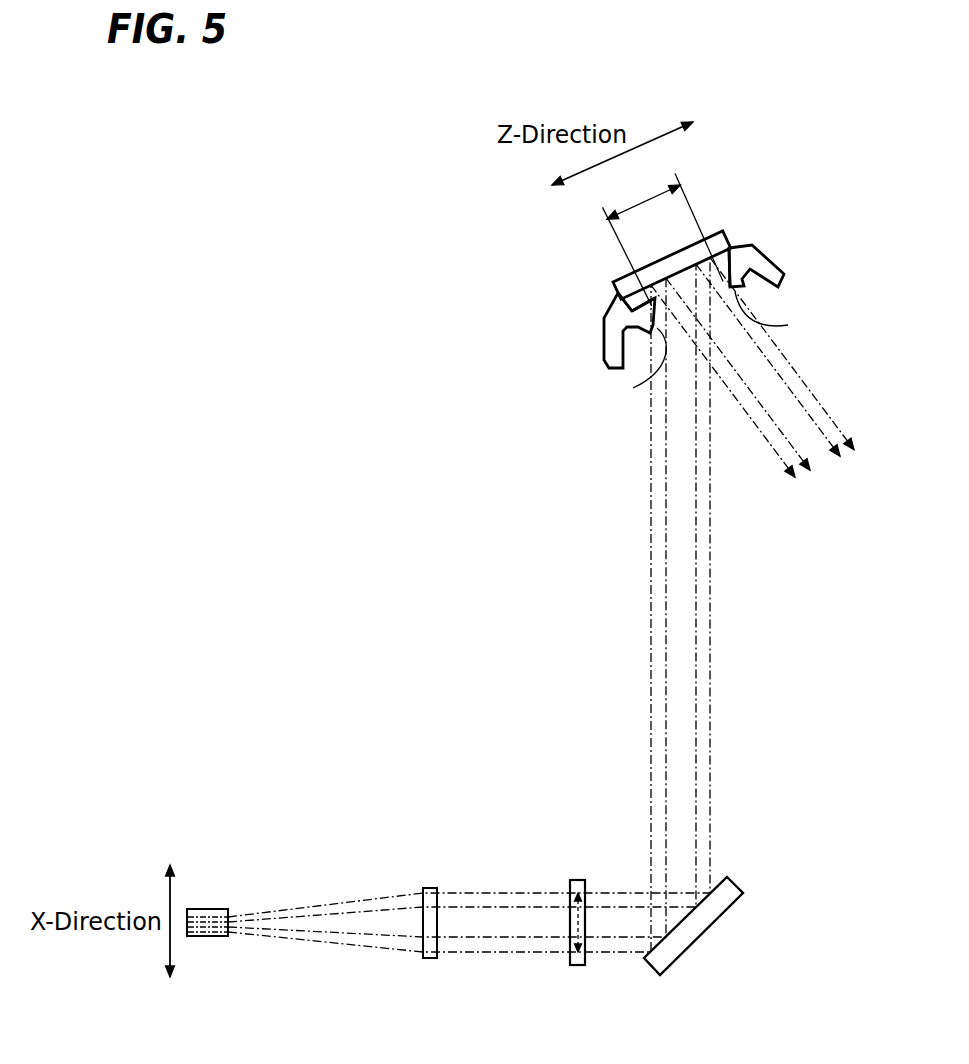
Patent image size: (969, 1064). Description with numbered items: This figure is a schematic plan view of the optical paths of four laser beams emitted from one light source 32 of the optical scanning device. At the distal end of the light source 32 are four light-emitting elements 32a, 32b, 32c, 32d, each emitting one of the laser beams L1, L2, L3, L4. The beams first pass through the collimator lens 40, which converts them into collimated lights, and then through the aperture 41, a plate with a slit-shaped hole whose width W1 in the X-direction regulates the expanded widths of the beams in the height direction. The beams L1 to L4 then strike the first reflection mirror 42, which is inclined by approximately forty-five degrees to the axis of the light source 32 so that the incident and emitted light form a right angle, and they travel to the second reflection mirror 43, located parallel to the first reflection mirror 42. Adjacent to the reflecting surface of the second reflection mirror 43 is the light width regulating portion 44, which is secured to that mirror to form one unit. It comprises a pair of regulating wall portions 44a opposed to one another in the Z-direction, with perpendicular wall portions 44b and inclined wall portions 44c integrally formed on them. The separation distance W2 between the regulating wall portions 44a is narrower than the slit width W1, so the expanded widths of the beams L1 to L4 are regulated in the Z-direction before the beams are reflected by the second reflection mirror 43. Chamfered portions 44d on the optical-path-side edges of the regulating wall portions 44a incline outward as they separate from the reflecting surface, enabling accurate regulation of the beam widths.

The light source 32 is at (208, 908).
The light-emitting element 32a is at (234, 934).
The light-emitting element 32b is at (234, 929).
The light-emitting element 32c is at (234, 917).
The light-emitting element 32d is at (232, 912).
The collimator lens 40 is at (432, 958).
The aperture 41 is at (578, 880).
The first reflection mirror 42 is at (697, 930).
The second reflection mirror 43 is at (725, 242).
The light width regulating portion 44 is at (655, 299).
The regulating wall portion 44a is at (688, 268).
The perpendicular wall portion 44b is at (617, 320).
The inclined wall portion 44c is at (610, 342).
The chamfered portion 44d is at (712, 347).
The laser beam L1 is at (542, 953).
The laser beam L2 is at (515, 938).
The laser beam L3 is at (555, 906).
The laser beam L4 is at (530, 891).
The width of slit hole W1 is at (582, 923).
The separation distance W2 is at (663, 238).